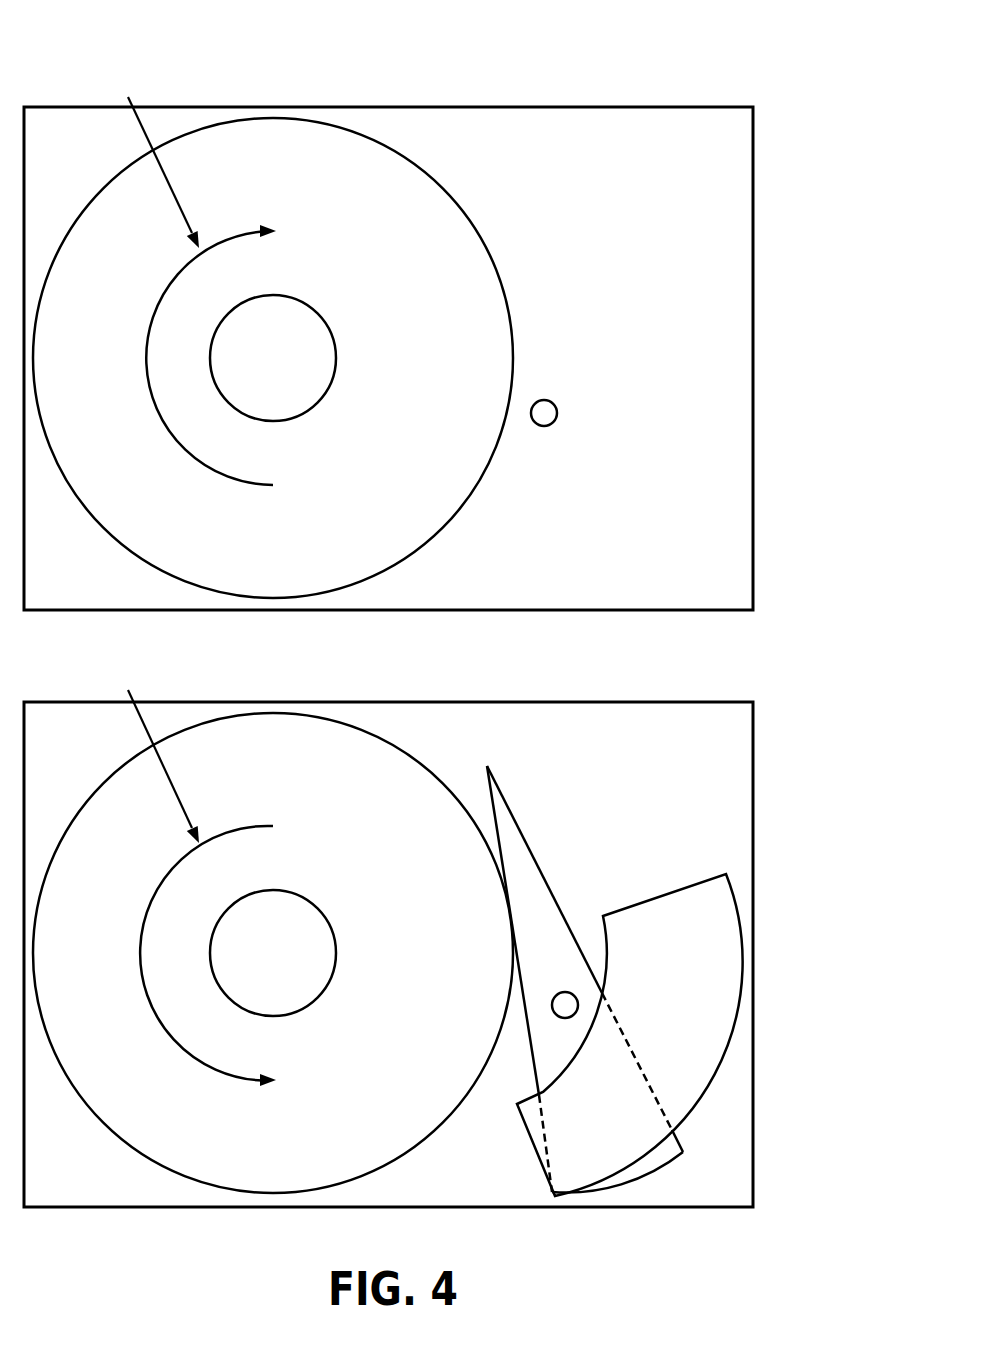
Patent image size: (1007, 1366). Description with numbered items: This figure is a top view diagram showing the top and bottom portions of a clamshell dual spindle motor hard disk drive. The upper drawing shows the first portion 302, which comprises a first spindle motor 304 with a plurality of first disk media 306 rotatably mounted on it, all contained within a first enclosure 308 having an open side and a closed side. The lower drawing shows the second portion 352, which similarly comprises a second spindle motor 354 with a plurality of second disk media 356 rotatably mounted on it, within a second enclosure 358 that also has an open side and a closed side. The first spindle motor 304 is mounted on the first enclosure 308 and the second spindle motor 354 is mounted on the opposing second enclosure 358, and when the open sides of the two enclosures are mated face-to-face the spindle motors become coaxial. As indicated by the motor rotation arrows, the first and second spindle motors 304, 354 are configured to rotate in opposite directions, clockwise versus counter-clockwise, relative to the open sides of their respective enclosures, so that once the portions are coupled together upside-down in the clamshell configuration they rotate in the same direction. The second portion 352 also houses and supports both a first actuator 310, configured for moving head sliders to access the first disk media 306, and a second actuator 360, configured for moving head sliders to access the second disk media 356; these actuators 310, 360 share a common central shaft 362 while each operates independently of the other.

The first portion 302 is at (422, 76).
The first spindle motor 304 is at (291, 371).
The first disk media 306 is at (292, 561).
The first enclosure 308 is at (667, 106).
The second portion 352 is at (155, 1252).
The second spindle motor 354 is at (291, 967).
The second disk media 356 is at (292, 1165).
The second enclosure 358 is at (702, 700).
The common central shaft 362 is at (565, 992).
The first actuator 310 is at (694, 1035).
The second actuator 360 is at (715, 984).